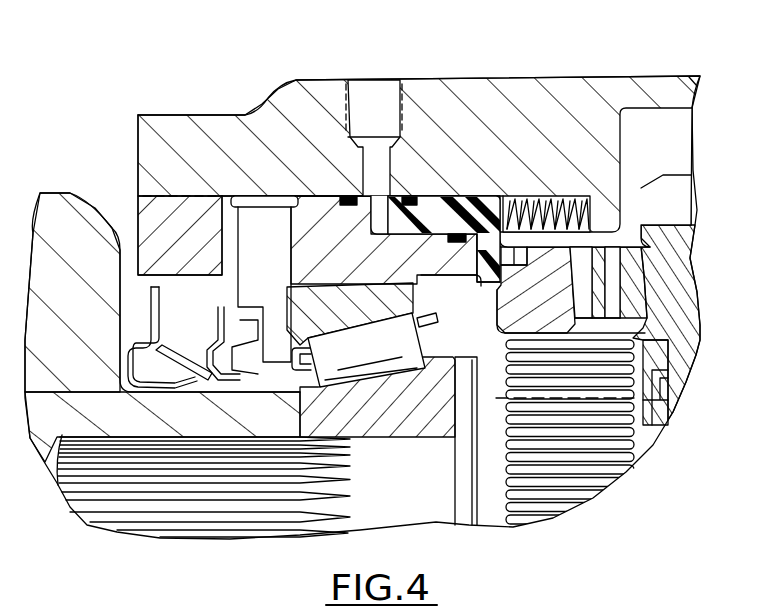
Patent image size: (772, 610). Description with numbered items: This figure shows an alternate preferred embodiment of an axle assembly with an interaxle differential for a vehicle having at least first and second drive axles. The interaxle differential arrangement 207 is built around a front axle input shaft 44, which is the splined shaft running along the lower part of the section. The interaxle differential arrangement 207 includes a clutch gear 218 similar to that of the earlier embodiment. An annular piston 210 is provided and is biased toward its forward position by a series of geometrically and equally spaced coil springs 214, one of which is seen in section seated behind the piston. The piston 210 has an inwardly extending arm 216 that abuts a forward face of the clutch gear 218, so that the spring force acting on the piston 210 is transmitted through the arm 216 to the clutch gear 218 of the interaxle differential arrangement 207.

The interaxle differential arrangement 207 is at (377, 68).
The annular piston 210 is at (455, 200).
The coil springs 214 is at (552, 200).
The inwardly extending arm 216 is at (480, 290).
The clutch gear 218 is at (494, 322).
The front axle input shaft 44 is at (437, 513).